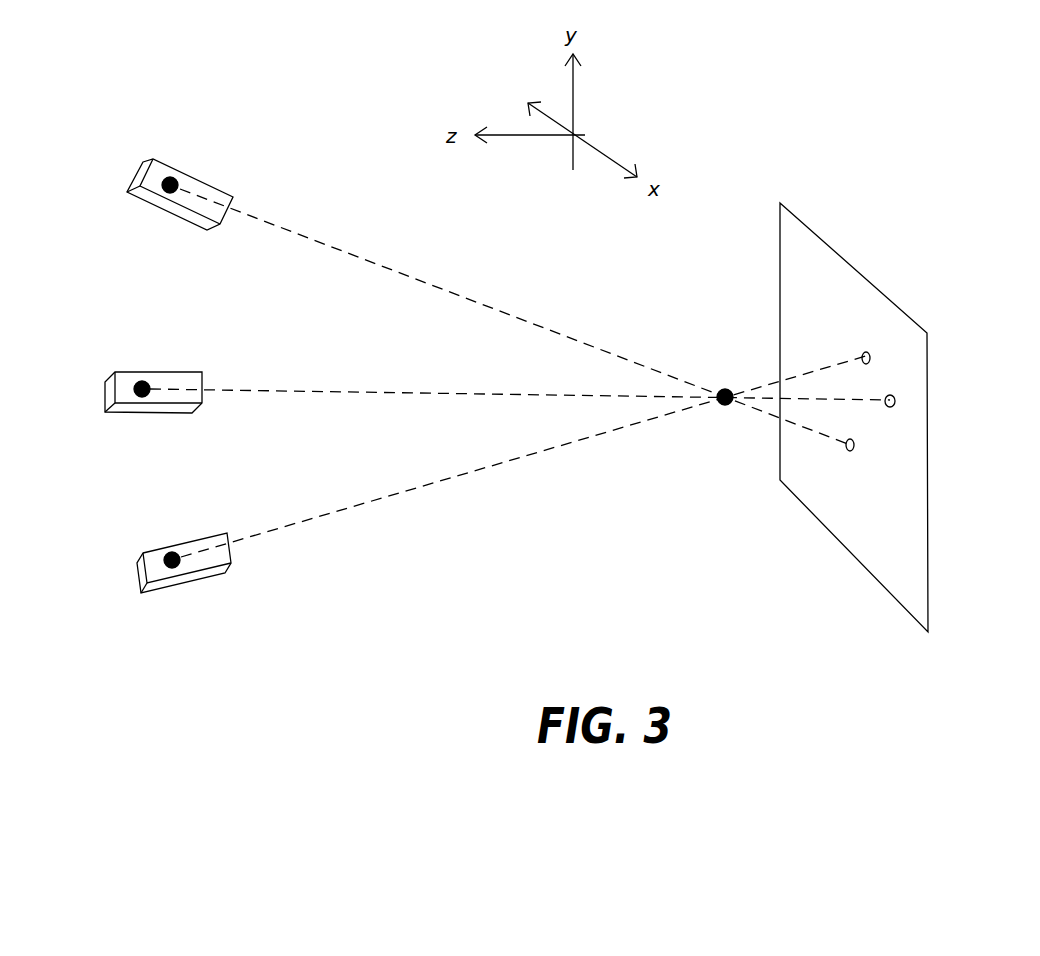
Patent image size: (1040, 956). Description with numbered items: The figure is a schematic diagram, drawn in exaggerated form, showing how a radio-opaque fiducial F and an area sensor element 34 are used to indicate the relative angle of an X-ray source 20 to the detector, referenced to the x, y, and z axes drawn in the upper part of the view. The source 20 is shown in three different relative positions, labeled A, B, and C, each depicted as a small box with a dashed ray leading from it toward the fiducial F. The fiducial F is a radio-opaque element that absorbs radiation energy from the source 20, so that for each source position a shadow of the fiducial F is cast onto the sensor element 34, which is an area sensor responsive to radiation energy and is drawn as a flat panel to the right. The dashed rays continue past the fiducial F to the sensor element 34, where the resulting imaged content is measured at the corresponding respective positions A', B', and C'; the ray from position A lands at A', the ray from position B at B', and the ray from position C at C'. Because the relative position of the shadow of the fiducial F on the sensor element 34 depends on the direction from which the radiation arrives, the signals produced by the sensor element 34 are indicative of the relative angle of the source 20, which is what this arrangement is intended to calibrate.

The source 20 is at (153, 368).
The area sensor element 34 is at (909, 417).
The fiducial F is at (727, 389).
The source position A is at (172, 199).
The source position B is at (153, 411).
The source position C is at (184, 583).
The shadow position A' is at (859, 475).
The shadow position B' is at (937, 405).
The shadow position C' is at (833, 318).